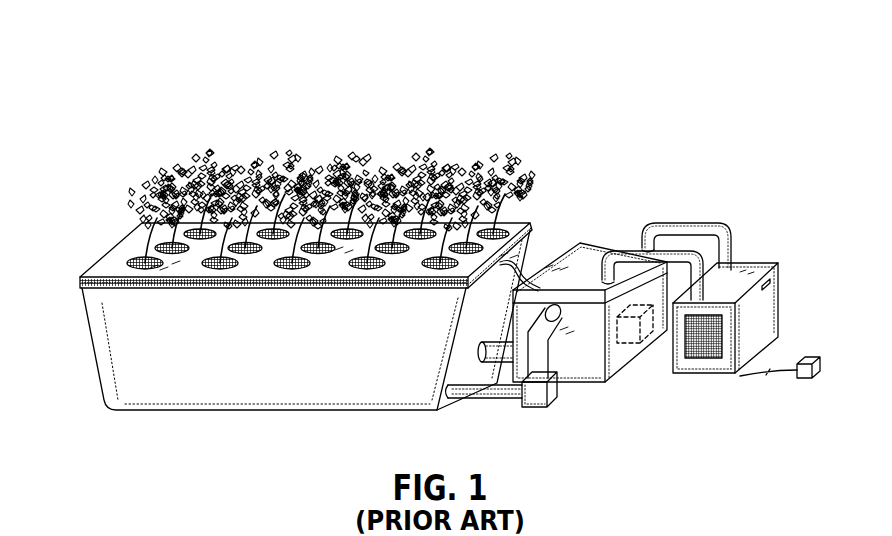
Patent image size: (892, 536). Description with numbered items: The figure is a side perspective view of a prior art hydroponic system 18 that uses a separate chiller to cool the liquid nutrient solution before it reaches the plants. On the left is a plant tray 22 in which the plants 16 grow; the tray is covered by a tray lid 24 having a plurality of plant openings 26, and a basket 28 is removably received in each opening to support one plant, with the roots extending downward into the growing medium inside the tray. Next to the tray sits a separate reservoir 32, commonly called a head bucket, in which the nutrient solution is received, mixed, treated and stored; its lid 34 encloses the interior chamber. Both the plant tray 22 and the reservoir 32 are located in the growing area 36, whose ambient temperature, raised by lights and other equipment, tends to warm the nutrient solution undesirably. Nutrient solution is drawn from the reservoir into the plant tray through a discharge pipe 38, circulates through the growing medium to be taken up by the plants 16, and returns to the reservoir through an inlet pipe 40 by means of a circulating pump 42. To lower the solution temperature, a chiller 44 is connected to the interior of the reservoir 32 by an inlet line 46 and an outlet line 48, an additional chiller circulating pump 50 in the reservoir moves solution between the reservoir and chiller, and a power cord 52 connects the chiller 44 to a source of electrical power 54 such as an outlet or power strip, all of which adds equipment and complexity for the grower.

The plants 16 is at (243, 170).
The prior art hydroponic system 18 is at (607, 187).
The plant tray 22 is at (237, 380).
The tray lid 24 is at (512, 233).
The plant openings 26 is at (143, 263).
The basket 28 is at (137, 270).
The reservoir 32 is at (585, 365).
The lid 34 is at (597, 252).
The growing area 36 is at (328, 140).
The discharge pipe 38 is at (490, 352).
The inlet pipe 40 is at (490, 395).
The circulating pump 42 is at (535, 395).
The chiller 44 is at (753, 262).
The inlet line 46 is at (668, 223).
The outlet line 48 is at (683, 253).
The chiller circulating pump 50 is at (632, 337).
The power cord 52 is at (760, 378).
The source of electrical power 54 is at (808, 357).